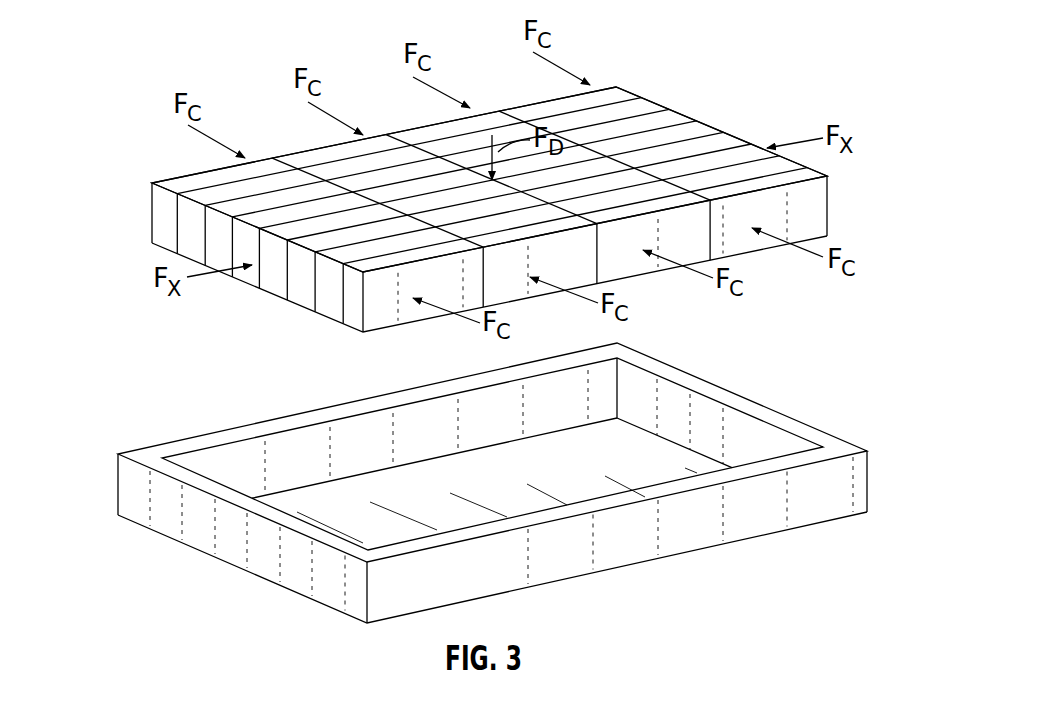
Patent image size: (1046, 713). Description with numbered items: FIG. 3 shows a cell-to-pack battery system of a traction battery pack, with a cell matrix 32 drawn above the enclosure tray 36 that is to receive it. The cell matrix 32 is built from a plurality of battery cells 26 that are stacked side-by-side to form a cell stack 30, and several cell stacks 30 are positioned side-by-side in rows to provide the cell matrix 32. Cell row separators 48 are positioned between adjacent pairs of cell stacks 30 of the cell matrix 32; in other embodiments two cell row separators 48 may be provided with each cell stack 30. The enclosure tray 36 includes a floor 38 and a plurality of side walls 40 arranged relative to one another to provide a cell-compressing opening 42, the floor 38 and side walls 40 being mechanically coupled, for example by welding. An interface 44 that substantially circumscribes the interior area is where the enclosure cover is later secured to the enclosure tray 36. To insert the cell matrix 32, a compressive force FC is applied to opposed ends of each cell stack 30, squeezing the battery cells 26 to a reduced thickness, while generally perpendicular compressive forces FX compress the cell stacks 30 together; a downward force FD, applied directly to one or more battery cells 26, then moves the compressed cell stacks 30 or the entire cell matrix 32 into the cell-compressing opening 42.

The battery cells 26 is at (648, 109).
The cell stack 30 is at (198, 165).
The cell matrix 32 is at (482, 171).
The enclosure tray 36 is at (492, 471).
The floor 38 is at (630, 448).
The side walls 40 is at (140, 446).
The cell-compressing opening 42 is at (653, 473).
The interface 44 is at (245, 502).
The cell row separators 48 is at (283, 162).